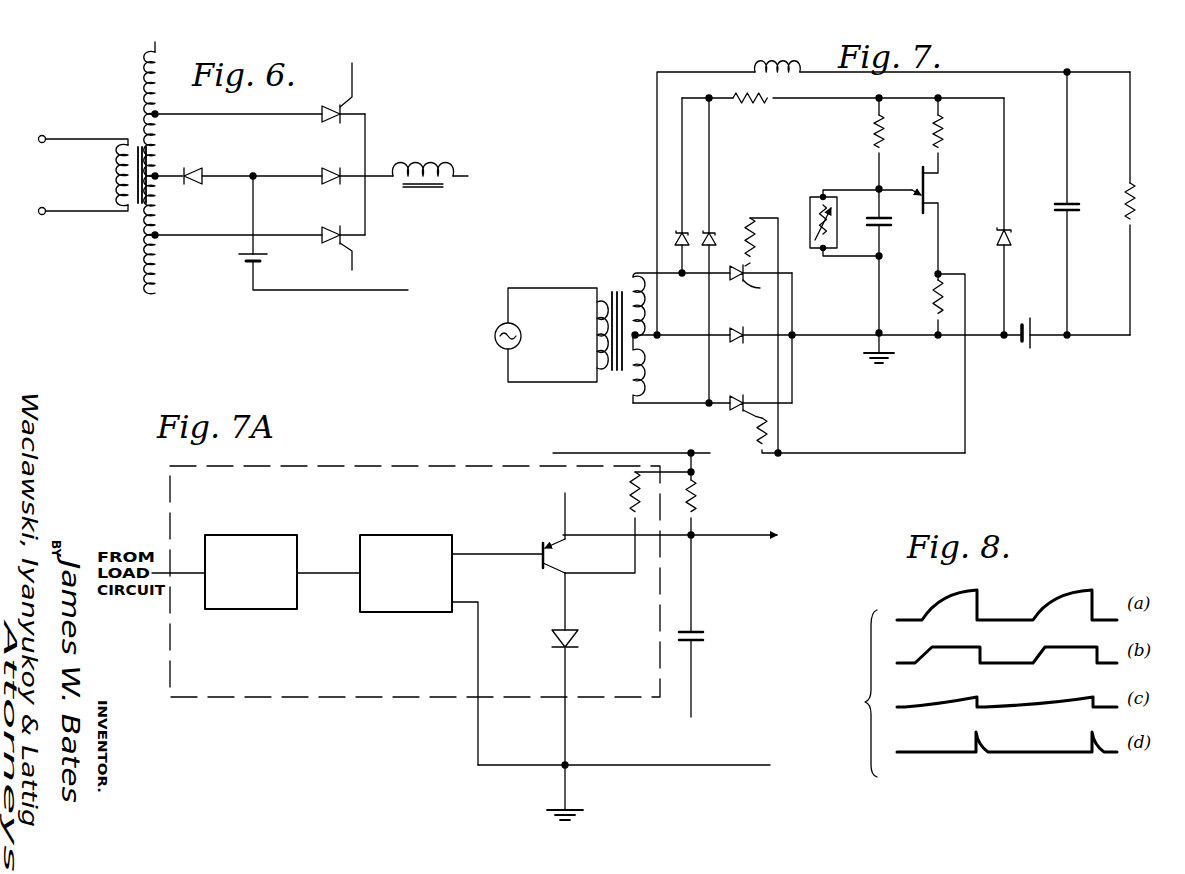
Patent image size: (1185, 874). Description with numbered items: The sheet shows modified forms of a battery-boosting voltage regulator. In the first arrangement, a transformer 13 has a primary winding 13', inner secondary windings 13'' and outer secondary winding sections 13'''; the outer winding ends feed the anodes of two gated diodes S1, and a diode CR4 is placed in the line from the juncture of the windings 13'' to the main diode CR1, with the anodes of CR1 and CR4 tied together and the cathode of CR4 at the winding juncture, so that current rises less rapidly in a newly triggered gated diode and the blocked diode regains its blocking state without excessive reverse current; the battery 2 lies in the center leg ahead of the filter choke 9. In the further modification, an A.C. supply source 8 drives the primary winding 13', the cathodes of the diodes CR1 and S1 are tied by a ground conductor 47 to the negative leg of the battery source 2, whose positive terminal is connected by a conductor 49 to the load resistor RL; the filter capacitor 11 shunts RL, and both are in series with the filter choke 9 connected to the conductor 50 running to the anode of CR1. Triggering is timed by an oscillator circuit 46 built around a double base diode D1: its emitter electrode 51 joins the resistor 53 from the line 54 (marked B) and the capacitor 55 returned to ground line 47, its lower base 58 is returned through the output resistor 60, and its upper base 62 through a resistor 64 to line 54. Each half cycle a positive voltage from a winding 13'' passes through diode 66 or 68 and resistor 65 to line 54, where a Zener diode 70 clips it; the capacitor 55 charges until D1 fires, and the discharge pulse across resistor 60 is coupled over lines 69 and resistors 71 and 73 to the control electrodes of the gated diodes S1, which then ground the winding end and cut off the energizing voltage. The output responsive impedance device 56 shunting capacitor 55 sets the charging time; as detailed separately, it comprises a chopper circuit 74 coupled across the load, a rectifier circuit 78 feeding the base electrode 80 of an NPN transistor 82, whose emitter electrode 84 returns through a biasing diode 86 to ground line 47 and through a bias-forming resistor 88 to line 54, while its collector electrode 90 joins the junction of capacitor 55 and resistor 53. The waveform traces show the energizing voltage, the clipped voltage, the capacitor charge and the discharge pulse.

In FIG. 6, the direct current supply 2 is at (236, 259).
In FIG. 7, the direct current supply 2 is at (1021, 346).
In FIG. 7, the A.C. supply source 8 is at (531, 335).
In FIG. 6, the filter choke 9 is at (430, 165).
In FIG. 7, the filter choke 9 is at (765, 63).
In FIG. 7, the filter capacitor 11 is at (1058, 203).
In FIG. 6, the transformer 13 is at (96, 157).
In FIG. 6, the primary winding 13' is at (84, 175).
In FIG. 7, the primary winding 13' is at (582, 335).
In FIG. 6, the secondary winding 13'' is at (176, 174).
In FIG. 7, the secondary winding 13'' is at (656, 335).
In FIG. 6, the second secondary winding 13''' is at (178, 171).
In FIG. 7, the oscillator circuit 46 is at (852, 130).
In FIG. 7, the ground conductor 47 is at (826, 340).
In FIG. 7A, the ground conductor 47 is at (737, 763).
In FIG. 7, the conductor 49 is at (1052, 339).
In FIG. 7, the conductor 50 is at (657, 145).
In FIG. 7, the emitter electrode 51 is at (915, 136).
In FIG. 7, the resistor 53 is at (872, 137).
In FIG. 7A, the resistor 53 is at (700, 504).
In FIG. 7, the line 54 is at (843, 86).
In FIG. 7A, the line 54 is at (636, 452).
In FIG. 7, the capacitor 55 is at (884, 228).
In FIG. 7A, the capacitor 55 is at (708, 636).
In FIG. 7, the output responsive impedance device 56 is at (810, 208).
In FIG. 7A, the output responsive impedance device 56 is at (394, 462).
In FIG. 7, the lower base 58 is at (945, 203).
In FIG. 7, the resistor 60 is at (930, 301).
In FIG. 7, the upper base 62 is at (915, 188).
In FIG. 7, the resistor 64 is at (946, 133).
In FIG. 7, the resistor 65 is at (772, 102).
In FIG. 7, the diode 66 is at (686, 230).
In FIG. 7, the diode 68 is at (714, 230).
In FIG. 7, the lines 69 is at (965, 420).
In FIG. 7, the Zener diode 70 is at (1010, 244).
In FIG. 7, the resistor 71 is at (746, 242).
In FIG. 7, the resistor 73 is at (755, 442).
In FIG. 7A, the chopper circuit 74 is at (258, 534).
In FIG. 7A, the rectifier circuit 78 is at (434, 534).
In FIG. 7A, the base electrode 80 is at (540, 548).
In FIG. 7A, the NPN transistor 82 is at (550, 536).
In FIG. 7A, the emitter electrode 84 is at (551, 575).
In FIG. 7A, the biasing diode 86 is at (580, 628).
In FIG. 7A, the bias-forming resistor 88 is at (630, 485).
In FIG. 7A, the collector electrode 90 is at (567, 537).
In FIG. 7, the terminal B is at (1004, 98).
In FIG. 6, the main diode CR1 is at (303, 168).
In FIG. 7, the main diode CR1 is at (753, 343).
In FIG. 6, the diode CR4 is at (214, 169).
In FIG. 7, the double base diode D1 is at (941, 213).
In FIG. 7, the load resistor RL is at (1145, 203).
In FIG. 6, the gated diode S1 is at (338, 104).
In FIG. 7, the gated diode S1 is at (758, 350).